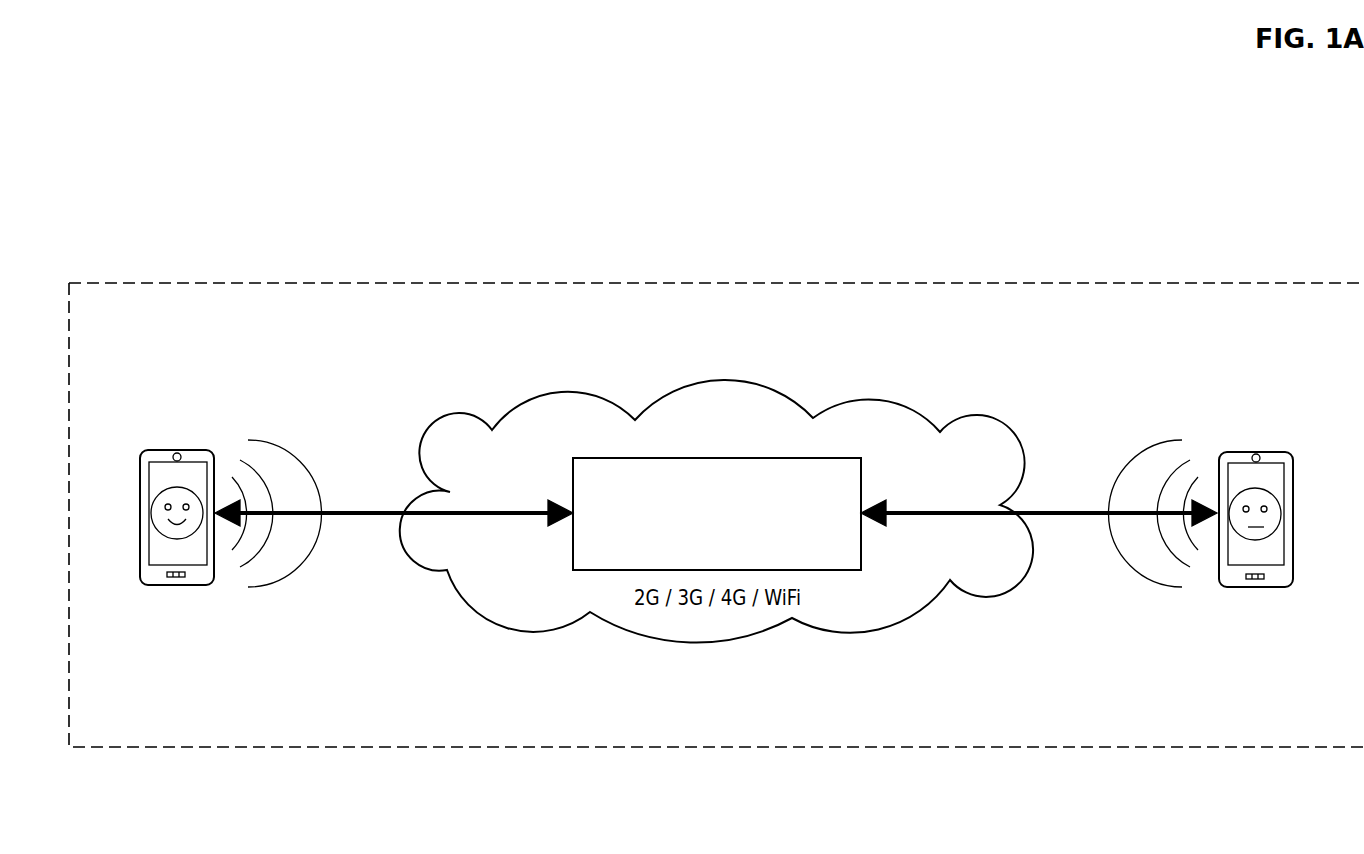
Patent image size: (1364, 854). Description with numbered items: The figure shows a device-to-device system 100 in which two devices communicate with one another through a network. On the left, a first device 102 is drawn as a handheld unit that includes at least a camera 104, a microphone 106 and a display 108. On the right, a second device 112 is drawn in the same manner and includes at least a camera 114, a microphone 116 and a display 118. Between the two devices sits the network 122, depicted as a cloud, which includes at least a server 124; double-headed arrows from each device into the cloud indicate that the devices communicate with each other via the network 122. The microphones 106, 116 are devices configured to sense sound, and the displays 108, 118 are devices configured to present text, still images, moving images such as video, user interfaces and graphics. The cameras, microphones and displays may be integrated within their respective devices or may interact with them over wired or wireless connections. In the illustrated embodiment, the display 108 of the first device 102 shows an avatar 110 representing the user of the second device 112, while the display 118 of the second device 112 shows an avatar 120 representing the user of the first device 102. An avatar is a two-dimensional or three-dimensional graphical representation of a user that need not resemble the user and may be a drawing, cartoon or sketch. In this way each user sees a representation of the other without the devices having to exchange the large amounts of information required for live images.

The device-to-device system 100 is at (147, 283).
The device 102 is at (157, 451).
The camera 104 is at (182, 452).
The microphone 106 is at (182, 578).
The display 108 is at (150, 491).
The avatar 110 is at (162, 535).
The device 112 is at (1276, 452).
The camera 114 is at (1249, 453).
The microphone 116 is at (1250, 580).
The display 118 is at (1286, 493).
The avatar 120 is at (1273, 534).
The network 122 is at (522, 398).
The server 124 is at (717, 514).